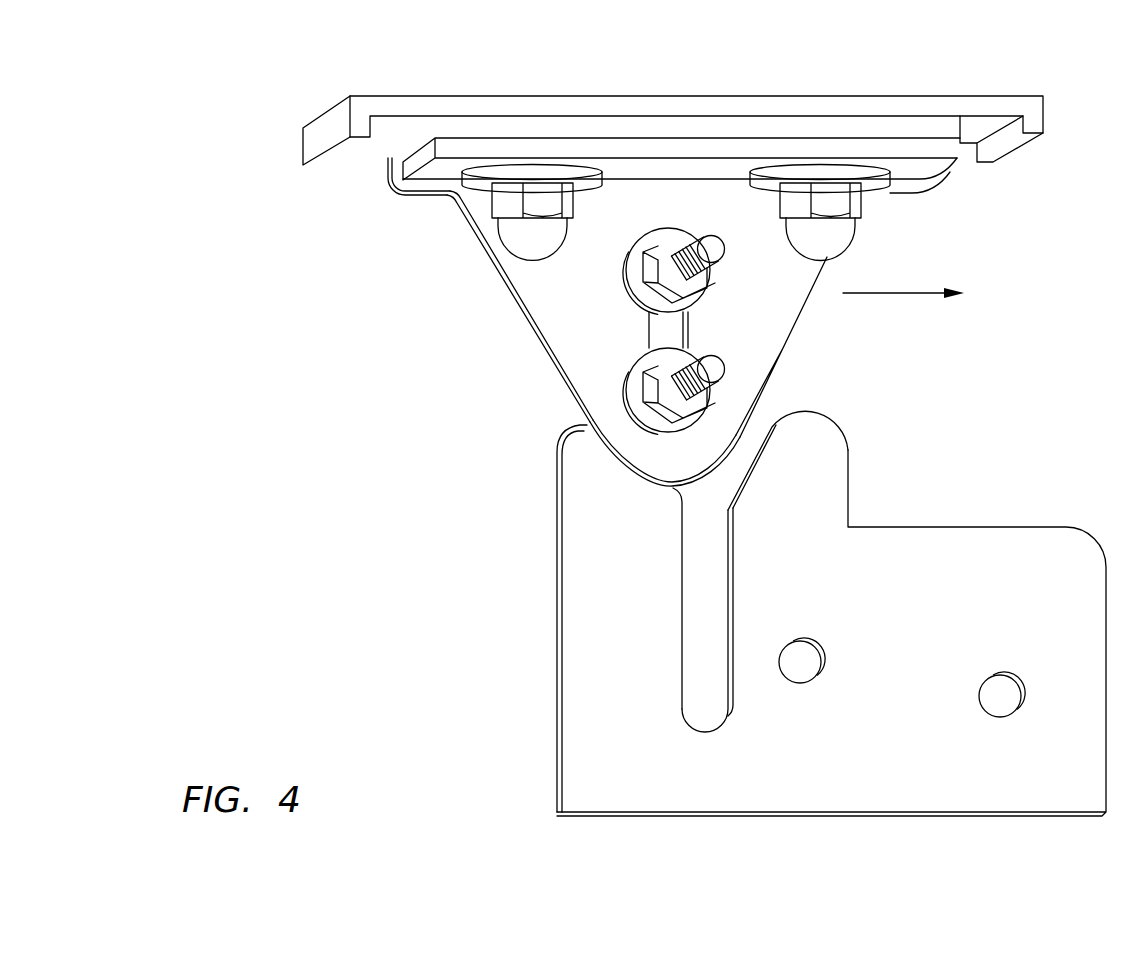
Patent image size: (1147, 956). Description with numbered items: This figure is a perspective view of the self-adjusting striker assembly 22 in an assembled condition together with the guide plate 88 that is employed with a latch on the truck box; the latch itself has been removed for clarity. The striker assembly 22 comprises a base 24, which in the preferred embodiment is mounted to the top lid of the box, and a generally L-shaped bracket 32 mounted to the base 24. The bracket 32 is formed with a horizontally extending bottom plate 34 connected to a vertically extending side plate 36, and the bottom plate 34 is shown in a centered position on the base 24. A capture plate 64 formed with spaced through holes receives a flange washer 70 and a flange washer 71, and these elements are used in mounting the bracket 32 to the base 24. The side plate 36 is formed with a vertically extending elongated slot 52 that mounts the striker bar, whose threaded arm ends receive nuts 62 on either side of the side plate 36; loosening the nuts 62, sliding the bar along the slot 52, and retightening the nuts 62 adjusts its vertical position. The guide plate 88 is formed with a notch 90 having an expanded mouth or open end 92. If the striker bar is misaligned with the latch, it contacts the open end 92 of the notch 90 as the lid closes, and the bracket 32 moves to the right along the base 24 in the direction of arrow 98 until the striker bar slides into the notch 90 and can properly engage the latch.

The self-adjusting striker assembly 22 is at (374, 268).
The base 24 is at (390, 100).
The L-shaped bracket 32 is at (864, 250).
The bottom plate 34 is at (403, 152).
The side plate 36 is at (803, 313).
The elongated slot 52 is at (672, 332).
The nuts 62 is at (643, 282).
The capture plate 64 is at (432, 175).
The flange washer 70 is at (857, 230).
The flange washer 71 is at (498, 239).
The guide plate 88 is at (1008, 490).
The notch 90 is at (702, 633).
The open end 92 is at (773, 422).
The arrow 98 is at (886, 293).